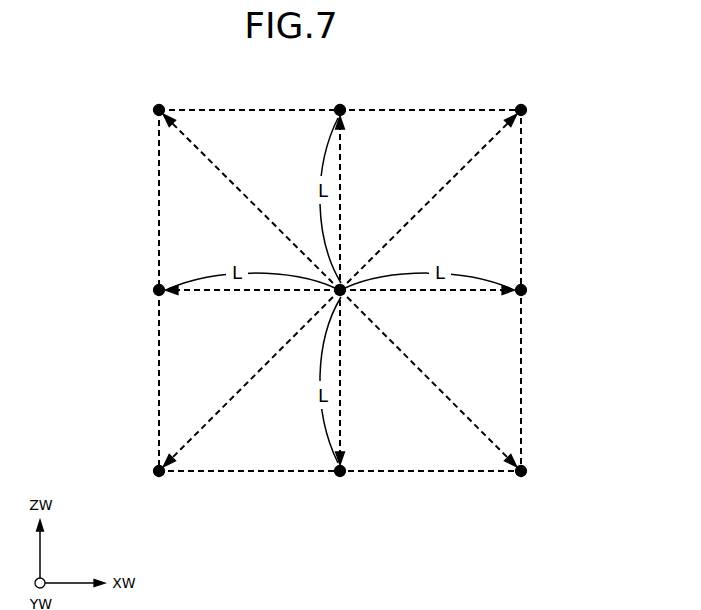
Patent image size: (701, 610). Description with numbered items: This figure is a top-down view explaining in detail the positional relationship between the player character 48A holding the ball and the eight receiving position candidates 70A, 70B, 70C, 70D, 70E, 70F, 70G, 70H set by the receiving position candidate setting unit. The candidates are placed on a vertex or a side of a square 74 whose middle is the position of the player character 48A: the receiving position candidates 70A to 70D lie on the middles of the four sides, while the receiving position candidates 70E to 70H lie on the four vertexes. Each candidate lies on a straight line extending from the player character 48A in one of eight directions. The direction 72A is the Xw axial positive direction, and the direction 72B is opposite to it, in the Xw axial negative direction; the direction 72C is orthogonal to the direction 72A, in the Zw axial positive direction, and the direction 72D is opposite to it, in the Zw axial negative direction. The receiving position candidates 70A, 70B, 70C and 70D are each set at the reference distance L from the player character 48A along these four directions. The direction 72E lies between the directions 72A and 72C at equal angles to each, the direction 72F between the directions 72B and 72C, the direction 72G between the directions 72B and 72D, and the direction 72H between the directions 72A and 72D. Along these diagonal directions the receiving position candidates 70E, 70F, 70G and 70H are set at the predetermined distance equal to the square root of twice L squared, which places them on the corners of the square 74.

The square 74 is at (524, 160).
The player character 48A is at (345, 283).
The receiving position candidate 70A is at (526, 290).
The receiving position candidate 70B is at (155, 290).
The receiving position candidate 70C is at (340, 105).
The receiving position candidate 70D is at (340, 477).
The receiving position candidate 70E is at (521, 105).
The receiving position candidate 70F is at (159, 105).
The receiving position candidate 70G is at (159, 477).
The receiving position candidate 70H is at (521, 477).
The direction 72A is at (432, 295).
The direction 72B is at (226, 295).
The direction 72C is at (343, 160).
The direction 72D is at (345, 430).
The direction 72E is at (447, 182).
The direction 72F is at (230, 180).
The direction 72G is at (228, 398).
The direction 72H is at (460, 410).